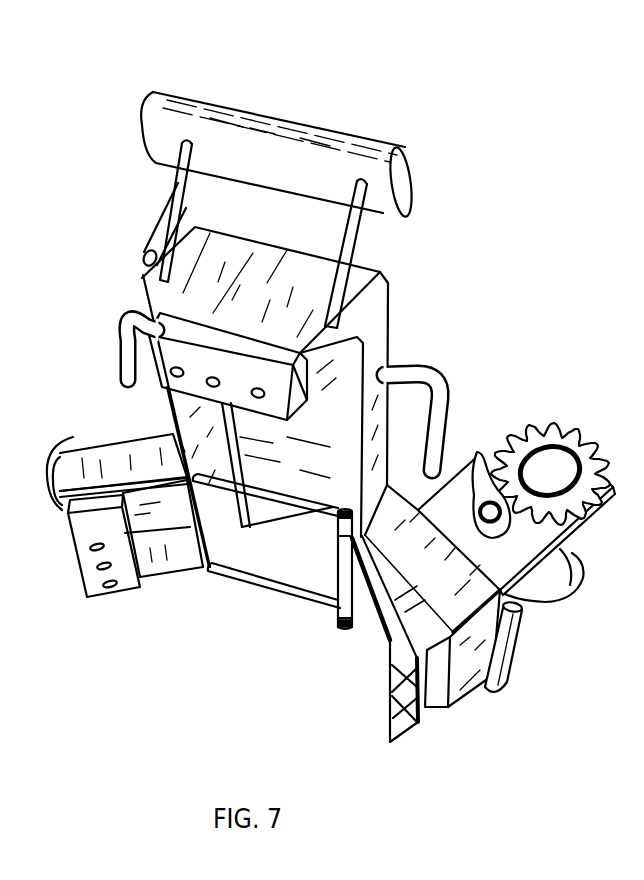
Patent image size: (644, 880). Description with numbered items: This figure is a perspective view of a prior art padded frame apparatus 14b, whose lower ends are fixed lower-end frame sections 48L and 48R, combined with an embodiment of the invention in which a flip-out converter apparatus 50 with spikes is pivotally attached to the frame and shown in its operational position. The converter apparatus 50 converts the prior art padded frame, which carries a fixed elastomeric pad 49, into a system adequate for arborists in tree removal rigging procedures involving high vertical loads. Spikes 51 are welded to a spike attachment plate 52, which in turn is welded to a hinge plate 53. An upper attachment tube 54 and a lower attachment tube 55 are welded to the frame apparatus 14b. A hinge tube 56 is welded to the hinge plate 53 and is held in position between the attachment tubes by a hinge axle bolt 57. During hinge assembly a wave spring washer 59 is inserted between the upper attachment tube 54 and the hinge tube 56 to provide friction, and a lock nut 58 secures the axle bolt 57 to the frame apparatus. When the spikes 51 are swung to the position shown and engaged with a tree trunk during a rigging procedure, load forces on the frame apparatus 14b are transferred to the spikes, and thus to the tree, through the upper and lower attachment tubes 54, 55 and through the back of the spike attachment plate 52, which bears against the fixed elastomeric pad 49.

The padded frame apparatus 14b is at (402, 298).
The fixed lower-end frame section 48R is at (145, 458).
The fixed lower-end frame section 48L is at (480, 593).
The elastomeric pad 49 is at (423, 706).
The flip-out converter apparatus 50 is at (346, 643).
The spikes 51 is at (383, 672).
The spike attachment plate 52 is at (383, 678).
The hinge plate 53 is at (370, 655).
The upper attachment tube 54 is at (338, 532).
The lower attachment tube 55 is at (343, 615).
The hinge tube 56 is at (338, 580).
The hinge axle bolt 57 is at (340, 508).
The lock nut 58 is at (347, 628).
The wave spring washer 59 is at (338, 538).